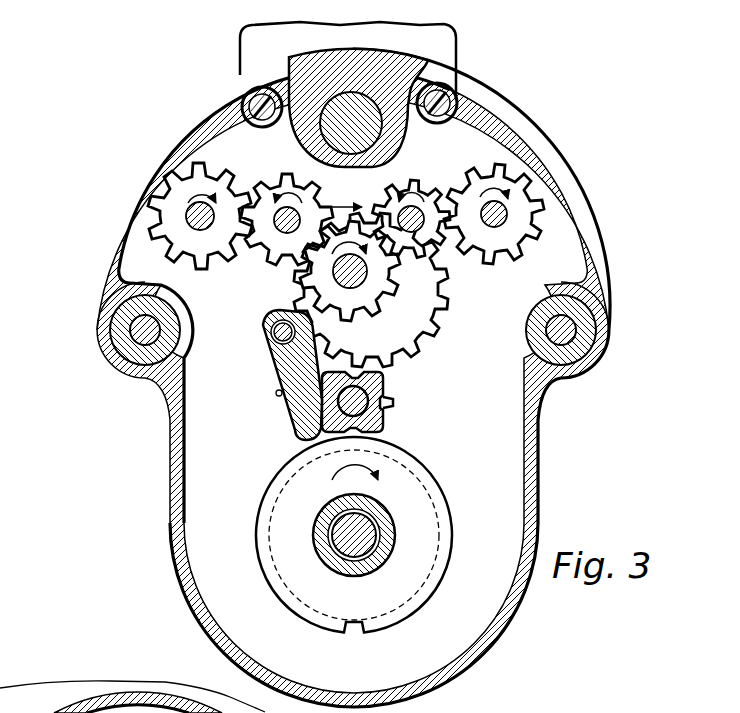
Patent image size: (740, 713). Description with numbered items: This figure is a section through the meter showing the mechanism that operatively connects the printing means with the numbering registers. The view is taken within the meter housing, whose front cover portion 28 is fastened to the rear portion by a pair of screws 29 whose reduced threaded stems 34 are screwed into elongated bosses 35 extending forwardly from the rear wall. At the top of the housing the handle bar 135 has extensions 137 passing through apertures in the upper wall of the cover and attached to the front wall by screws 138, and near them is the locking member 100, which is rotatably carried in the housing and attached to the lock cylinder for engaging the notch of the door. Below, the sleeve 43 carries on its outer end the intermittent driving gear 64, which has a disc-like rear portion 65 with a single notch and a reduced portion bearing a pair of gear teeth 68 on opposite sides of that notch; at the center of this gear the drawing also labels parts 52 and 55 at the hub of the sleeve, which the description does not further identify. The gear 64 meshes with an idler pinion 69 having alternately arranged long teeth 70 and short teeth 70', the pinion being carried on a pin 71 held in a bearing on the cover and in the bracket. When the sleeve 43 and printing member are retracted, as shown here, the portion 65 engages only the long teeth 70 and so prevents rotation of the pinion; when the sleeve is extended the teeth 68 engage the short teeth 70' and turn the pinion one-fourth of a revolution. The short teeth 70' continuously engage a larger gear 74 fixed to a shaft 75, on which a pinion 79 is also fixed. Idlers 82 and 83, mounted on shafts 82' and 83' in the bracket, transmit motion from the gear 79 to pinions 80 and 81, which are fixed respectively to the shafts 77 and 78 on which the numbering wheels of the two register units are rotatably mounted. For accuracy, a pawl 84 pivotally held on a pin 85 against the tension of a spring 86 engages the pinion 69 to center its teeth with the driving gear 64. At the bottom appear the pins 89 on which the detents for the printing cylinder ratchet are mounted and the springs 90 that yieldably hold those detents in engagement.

The front cover portion 28 is at (105, 208).
The screws 29 is at (142, 335).
The reduced threaded stems 34 is at (130, 332).
The elongated bosses 35 is at (125, 312).
The sleeve 43 is at (318, 522).
The shaft 52 is at (345, 547).
The bushing 55 is at (333, 540).
The intermittent driving gear 64 is at (428, 516).
The disc-like rear portion 65 is at (434, 469).
The gear teeth 68 is at (344, 632).
The idler pinion 69 is at (385, 388).
The long teeth 70 is at (393, 408).
The short teeth 70' is at (422, 394).
The pin 71 is at (350, 412).
The larger gear 74 is at (430, 300).
The shaft 75 is at (338, 280).
The shaft 77 is at (187, 221).
The shaft 78 is at (487, 195).
The pinion 79 is at (366, 300).
The pinion 80 is at (212, 172).
The pinion 81 is at (474, 190).
The idler 82 is at (287, 210).
The shaft 82' is at (255, 255).
The idler 83 is at (412, 195).
The shaft 83' is at (455, 255).
The pawl 84 is at (296, 406).
The pin 85 is at (270, 335).
The spring 86 is at (276, 391).
The pins 89 is at (138, 712).
The springs 90 is at (180, 712).
The locking member 100 is at (349, 92).
The bar 135 is at (450, 40).
The extensions 137 is at (243, 92).
The screws 138 is at (252, 106).